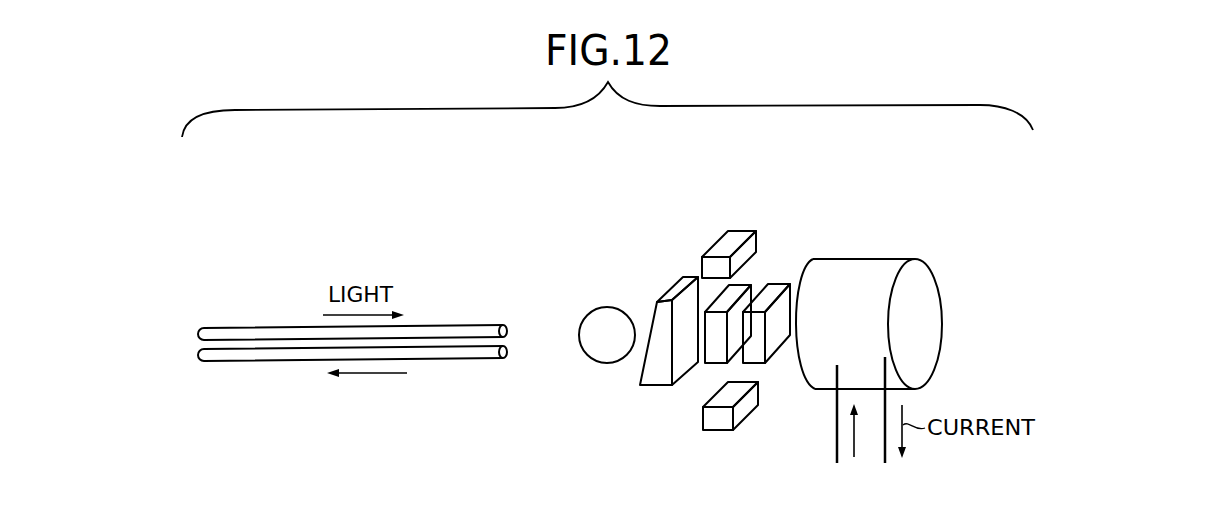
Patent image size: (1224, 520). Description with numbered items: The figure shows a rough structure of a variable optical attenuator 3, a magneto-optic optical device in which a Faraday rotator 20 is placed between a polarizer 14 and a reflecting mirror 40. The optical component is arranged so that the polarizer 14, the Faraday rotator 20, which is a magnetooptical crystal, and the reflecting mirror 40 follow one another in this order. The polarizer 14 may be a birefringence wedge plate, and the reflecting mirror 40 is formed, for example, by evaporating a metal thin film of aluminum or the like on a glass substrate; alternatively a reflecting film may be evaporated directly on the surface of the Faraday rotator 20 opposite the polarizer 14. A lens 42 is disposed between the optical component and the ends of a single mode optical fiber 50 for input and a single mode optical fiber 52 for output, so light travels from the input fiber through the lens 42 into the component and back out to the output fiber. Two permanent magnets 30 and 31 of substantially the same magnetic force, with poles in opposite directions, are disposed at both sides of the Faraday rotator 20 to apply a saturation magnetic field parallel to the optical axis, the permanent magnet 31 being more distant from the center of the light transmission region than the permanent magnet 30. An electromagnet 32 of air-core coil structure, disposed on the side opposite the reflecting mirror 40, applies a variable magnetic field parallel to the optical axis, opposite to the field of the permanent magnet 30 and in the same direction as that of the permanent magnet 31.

The variable optical attenuator 3 is at (764, 188).
The polarizer 14 is at (673, 290).
The Faraday rotator 20 is at (752, 282).
The permanent magnet 30 is at (720, 247).
The permanent magnet 31 is at (715, 423).
The electromagnet 32 is at (875, 258).
The reflecting mirror 40 is at (778, 343).
The lens 42 is at (595, 363).
The single mode optical fiber for input 50 is at (230, 328).
The single mode optical fiber for output 52 is at (233, 362).